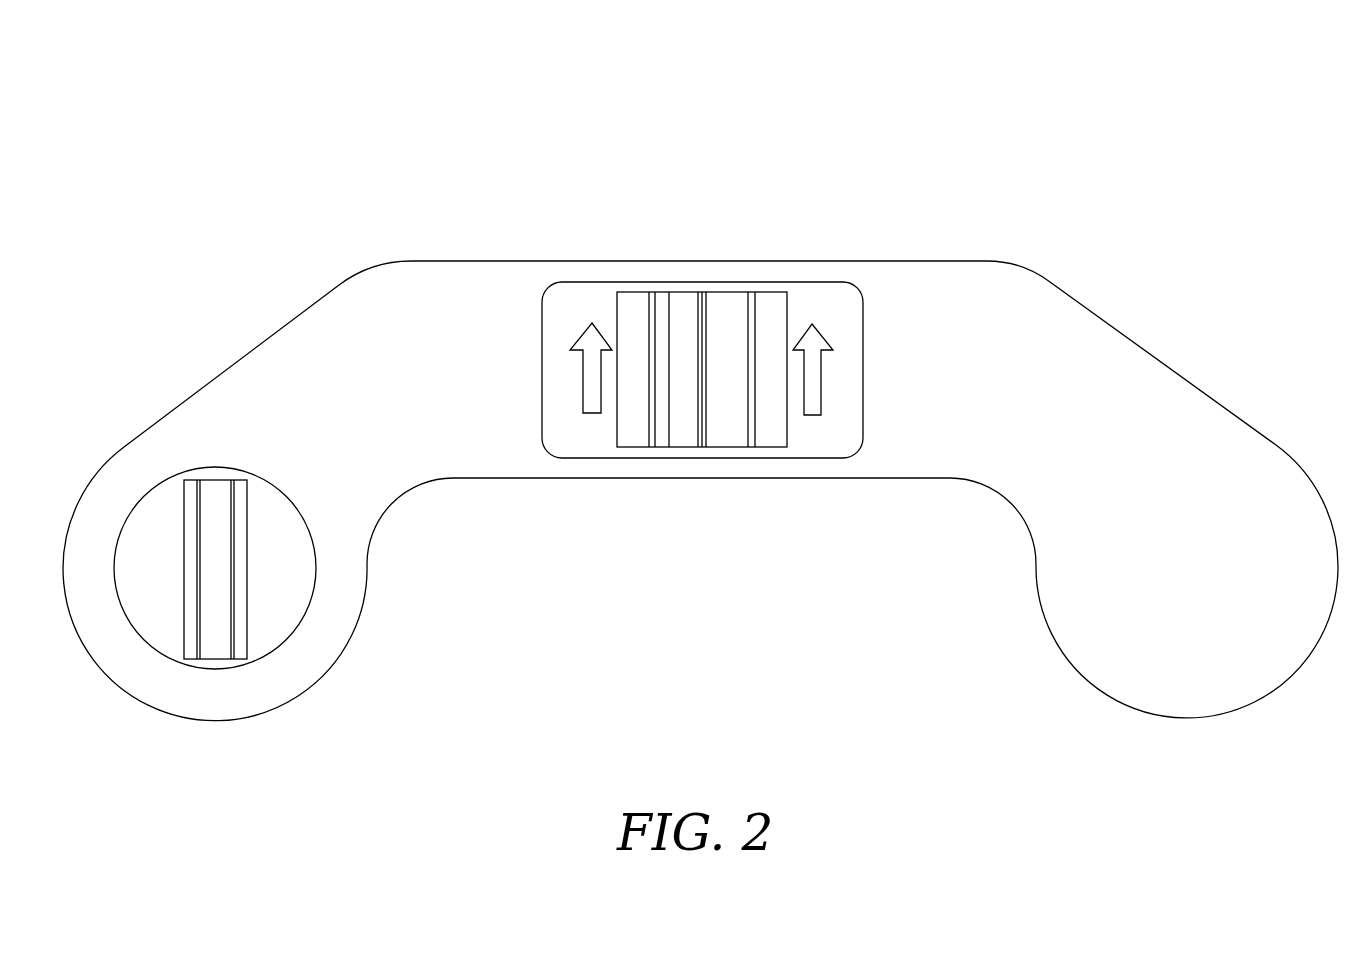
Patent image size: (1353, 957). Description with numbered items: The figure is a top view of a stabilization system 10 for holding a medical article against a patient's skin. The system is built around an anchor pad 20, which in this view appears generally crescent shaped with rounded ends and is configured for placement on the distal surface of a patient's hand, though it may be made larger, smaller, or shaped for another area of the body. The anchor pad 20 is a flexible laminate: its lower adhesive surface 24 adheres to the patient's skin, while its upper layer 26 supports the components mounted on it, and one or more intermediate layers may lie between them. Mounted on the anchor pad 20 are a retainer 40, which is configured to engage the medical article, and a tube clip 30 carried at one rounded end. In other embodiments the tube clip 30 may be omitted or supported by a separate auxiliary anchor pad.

The stabilization system 10 is at (547, 128).
The anchor pad 20 is at (1083, 342).
The lower adhesive surface 24 is at (897, 481).
The upper layer 26 is at (321, 346).
The tube clip 30 is at (280, 578).
The retainer 40 is at (813, 300).